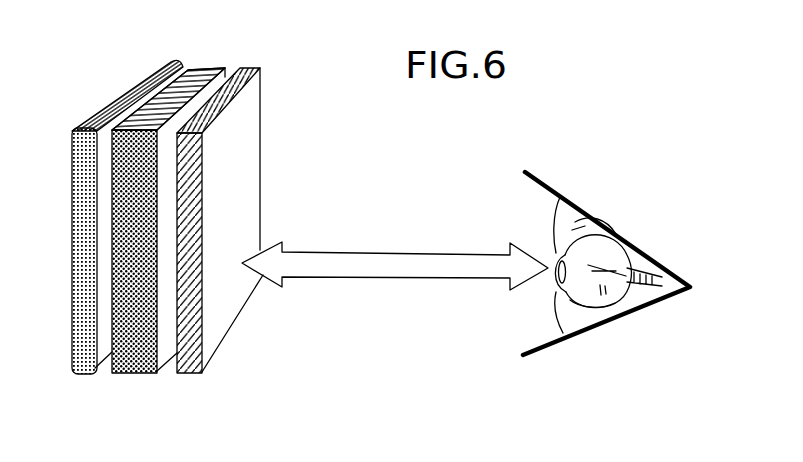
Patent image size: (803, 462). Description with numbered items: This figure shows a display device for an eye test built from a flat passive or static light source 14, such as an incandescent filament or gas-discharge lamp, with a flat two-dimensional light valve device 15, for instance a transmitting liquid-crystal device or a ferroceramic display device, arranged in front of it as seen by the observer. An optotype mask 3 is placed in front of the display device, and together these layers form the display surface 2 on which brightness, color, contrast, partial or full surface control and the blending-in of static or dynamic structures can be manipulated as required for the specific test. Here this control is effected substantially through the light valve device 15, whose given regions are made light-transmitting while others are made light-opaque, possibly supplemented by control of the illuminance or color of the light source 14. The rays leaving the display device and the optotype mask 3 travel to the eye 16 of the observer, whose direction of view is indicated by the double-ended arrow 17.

The display surface 2 is at (188, 115).
The optotype mask 3 is at (197, 373).
The passive light source 14 is at (78, 373).
The light valve device 15 is at (145, 358).
The eye of the observer 16 is at (595, 247).
The double-ended arrow 17 is at (363, 265).